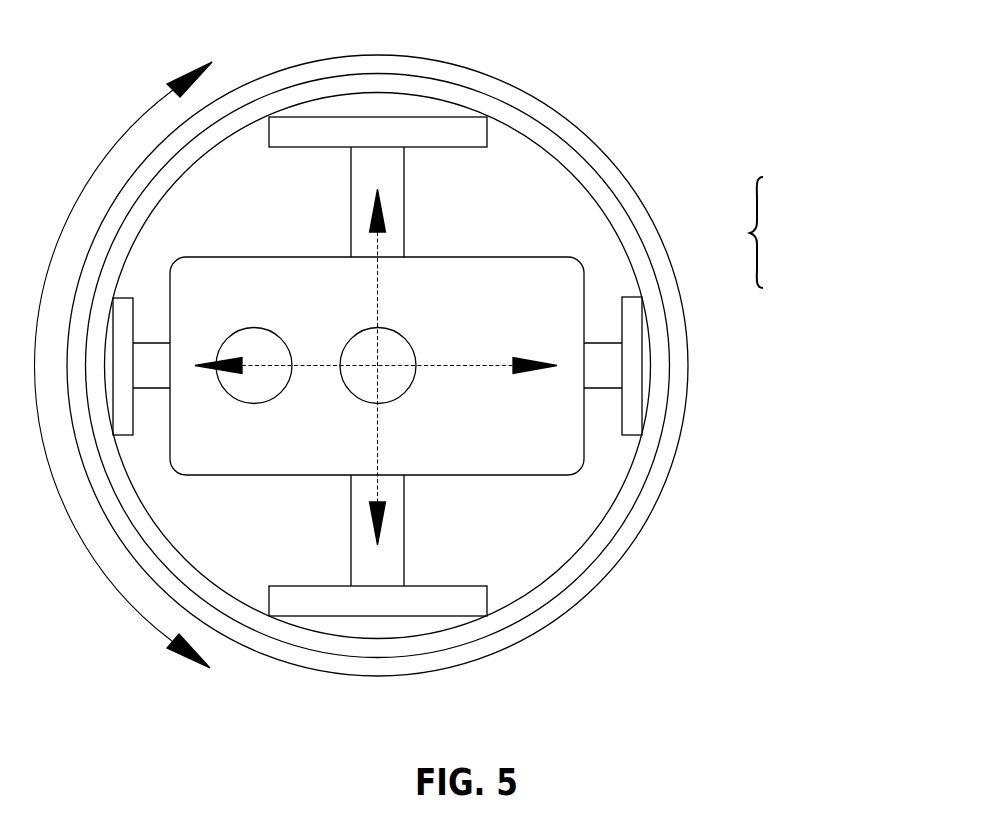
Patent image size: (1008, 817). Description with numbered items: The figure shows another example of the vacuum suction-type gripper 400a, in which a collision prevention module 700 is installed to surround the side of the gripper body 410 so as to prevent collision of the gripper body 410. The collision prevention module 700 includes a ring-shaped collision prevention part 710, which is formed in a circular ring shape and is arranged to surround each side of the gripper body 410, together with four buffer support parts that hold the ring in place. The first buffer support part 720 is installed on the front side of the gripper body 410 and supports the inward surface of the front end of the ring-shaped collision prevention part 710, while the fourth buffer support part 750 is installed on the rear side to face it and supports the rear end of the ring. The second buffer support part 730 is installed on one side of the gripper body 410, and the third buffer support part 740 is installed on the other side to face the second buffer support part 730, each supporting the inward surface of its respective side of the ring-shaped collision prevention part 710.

The vacuum suction-type gripper 400a is at (142, 26).
The gripper body 410 is at (578, 453).
The collision prevention module 700 is at (796, 234).
The ring-shaped collision prevention part 710 is at (627, 192).
The first buffer support part 720 is at (404, 210).
The second buffer support part 730 is at (150, 347).
The third buffer support part 740 is at (602, 347).
The fourth buffer support part 750 is at (400, 527).